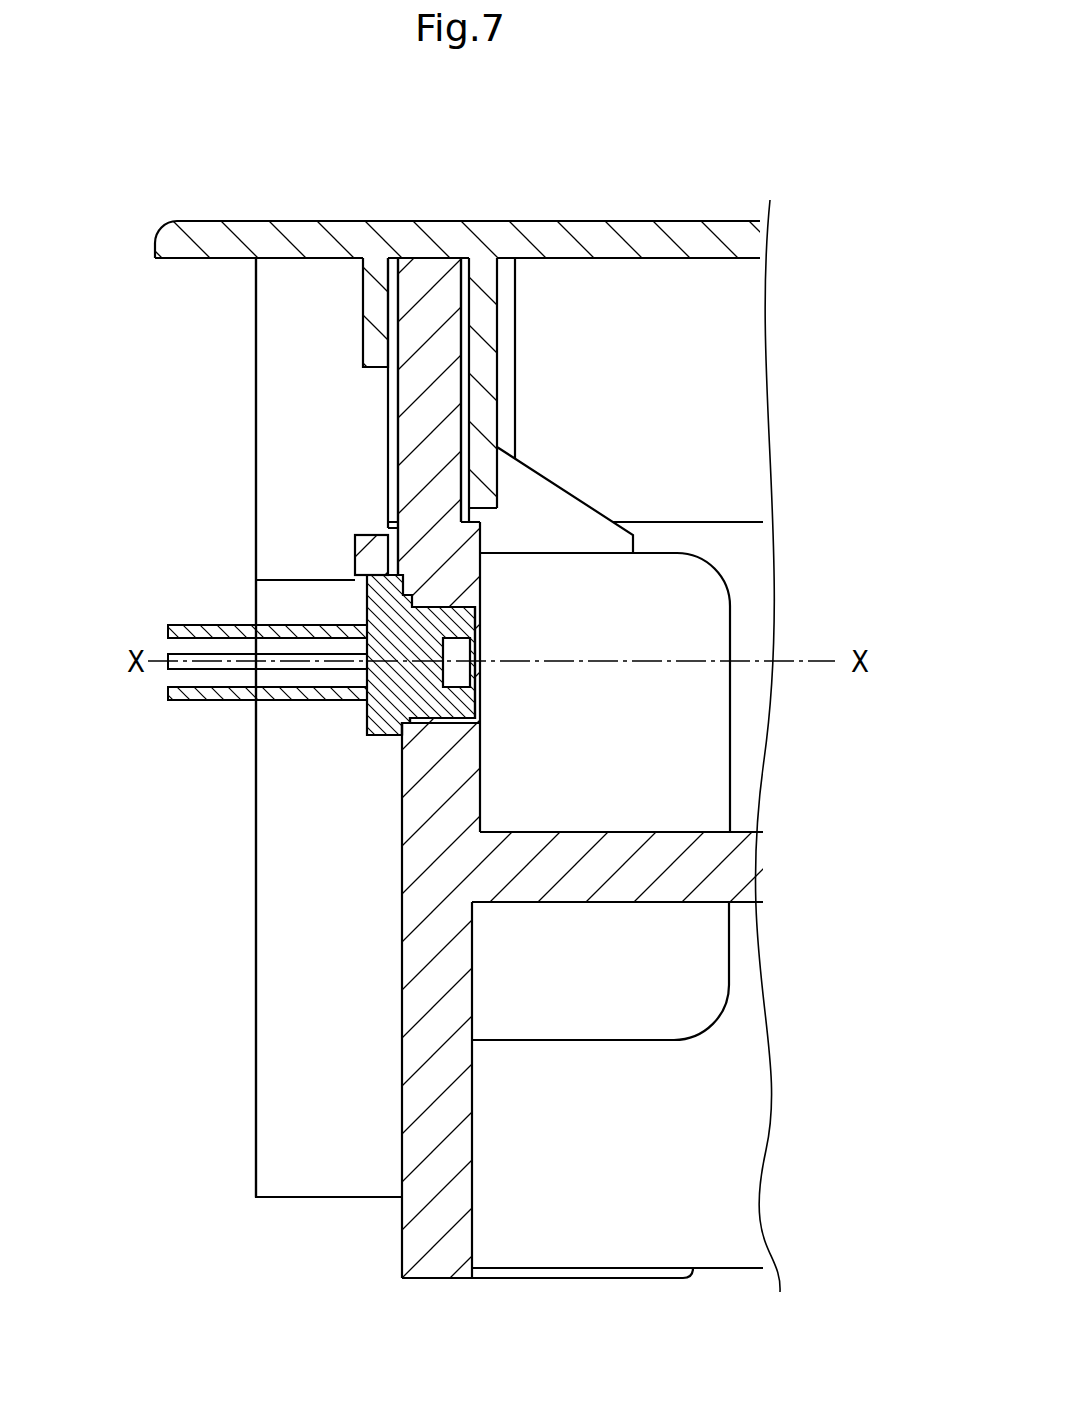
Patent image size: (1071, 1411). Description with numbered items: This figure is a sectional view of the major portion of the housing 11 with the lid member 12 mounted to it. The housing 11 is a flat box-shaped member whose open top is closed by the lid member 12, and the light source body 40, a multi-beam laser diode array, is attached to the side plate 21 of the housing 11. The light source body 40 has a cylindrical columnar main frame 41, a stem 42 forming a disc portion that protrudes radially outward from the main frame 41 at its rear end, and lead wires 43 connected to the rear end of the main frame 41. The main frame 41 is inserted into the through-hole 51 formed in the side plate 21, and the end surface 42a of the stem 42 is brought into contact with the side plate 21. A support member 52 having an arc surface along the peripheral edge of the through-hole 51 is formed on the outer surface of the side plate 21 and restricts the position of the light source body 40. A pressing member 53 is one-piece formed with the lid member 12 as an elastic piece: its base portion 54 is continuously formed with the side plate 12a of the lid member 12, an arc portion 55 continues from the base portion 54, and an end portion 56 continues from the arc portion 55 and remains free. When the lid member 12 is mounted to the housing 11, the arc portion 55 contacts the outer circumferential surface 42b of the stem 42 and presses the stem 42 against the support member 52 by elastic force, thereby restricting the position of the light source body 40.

The housing 11 is at (390, 1259).
The lid member 12 is at (733, 210).
The side plate of the lid member 12a is at (385, 297).
The side plate of the housing 21 is at (430, 970).
The light source body 40 is at (355, 716).
The main frame 41 is at (402, 790).
The stem 42 is at (400, 736).
The end surface of the stem 42a is at (430, 585).
The outer circumferential surface of the stem 42b is at (398, 565).
The lead wires 43 is at (167, 689).
The through-hole 51 is at (455, 602).
The support member 52 is at (355, 550).
The pressing member 53 is at (249, 404).
The base portion 54 is at (288, 332).
The arc portion 55 is at (282, 603).
The end portion 56 is at (312, 1040).